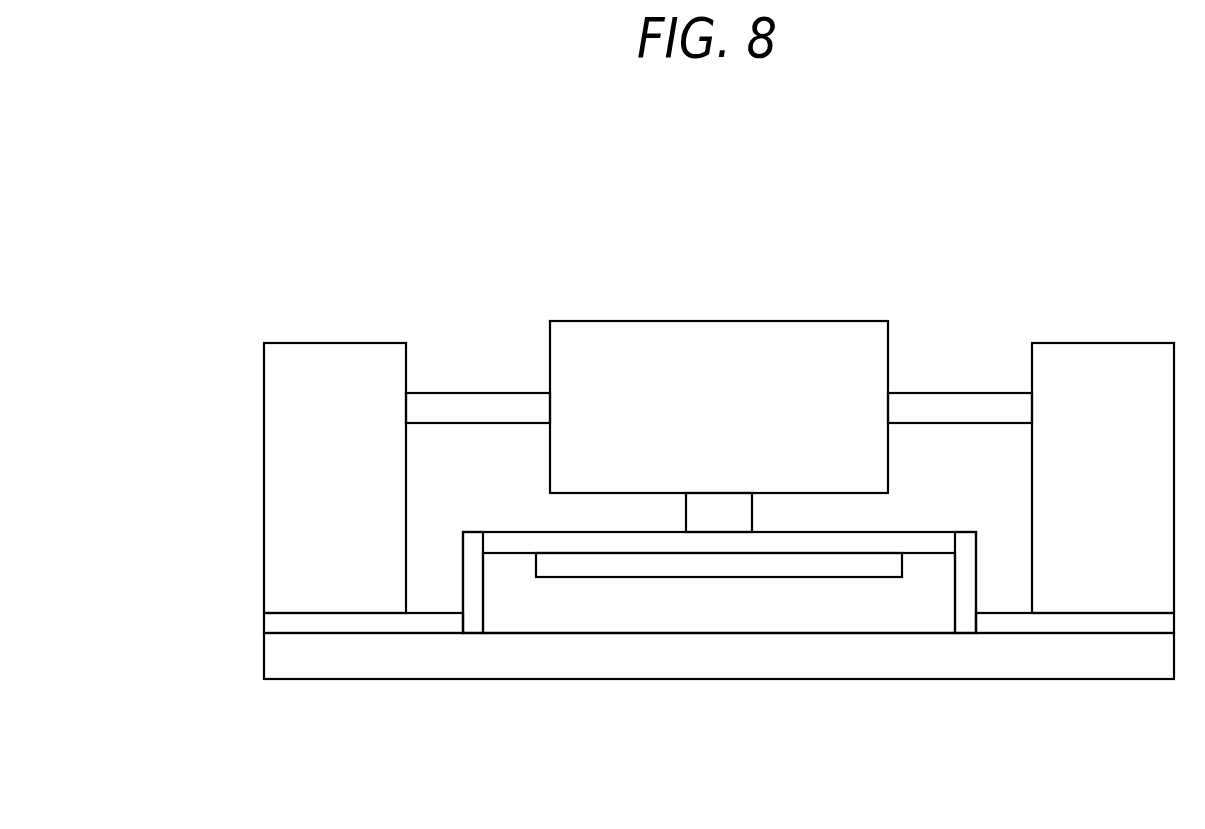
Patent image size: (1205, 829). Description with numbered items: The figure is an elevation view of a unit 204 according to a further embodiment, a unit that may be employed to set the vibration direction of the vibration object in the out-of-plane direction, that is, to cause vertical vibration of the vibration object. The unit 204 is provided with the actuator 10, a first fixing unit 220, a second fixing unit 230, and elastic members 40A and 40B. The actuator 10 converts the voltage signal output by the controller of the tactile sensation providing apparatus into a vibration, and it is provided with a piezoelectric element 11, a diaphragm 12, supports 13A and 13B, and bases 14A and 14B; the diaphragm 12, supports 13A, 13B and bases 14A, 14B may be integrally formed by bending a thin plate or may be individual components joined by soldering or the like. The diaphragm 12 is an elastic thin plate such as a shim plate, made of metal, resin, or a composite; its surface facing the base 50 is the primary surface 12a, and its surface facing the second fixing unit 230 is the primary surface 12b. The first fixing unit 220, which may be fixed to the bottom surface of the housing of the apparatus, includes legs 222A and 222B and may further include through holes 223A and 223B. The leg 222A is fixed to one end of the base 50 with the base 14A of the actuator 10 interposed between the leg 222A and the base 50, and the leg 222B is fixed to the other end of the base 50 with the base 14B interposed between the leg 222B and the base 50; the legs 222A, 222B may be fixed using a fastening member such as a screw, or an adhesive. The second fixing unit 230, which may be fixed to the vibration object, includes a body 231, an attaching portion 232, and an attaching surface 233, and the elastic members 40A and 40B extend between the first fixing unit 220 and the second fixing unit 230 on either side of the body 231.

The unit 204 is at (480, 194).
The actuator 10 is at (719, 645).
The piezoelectric element 11 is at (729, 570).
The diaphragm 12 is at (843, 542).
The primary surface 12a is at (505, 554).
The primary surface 12b is at (507, 532).
The support 13A is at (474, 592).
The support 13B is at (932, 643).
The base 14A is at (382, 624).
The base 14B is at (1009, 625).
The base 50 is at (292, 655).
The elastic member 40A is at (476, 405).
The elastic member 40B is at (958, 405).
The first fixing unit 220 is at (721, 402).
The leg 222A is at (355, 387).
The through hole 223A is at (302, 342).
The leg 222B is at (1087, 392).
The through hole 223B is at (1028, 242).
The second fixing unit 230 is at (719, 362).
The body 231 is at (774, 347).
The attaching portion 232 is at (716, 508).
The attaching surface 233 is at (657, 320).